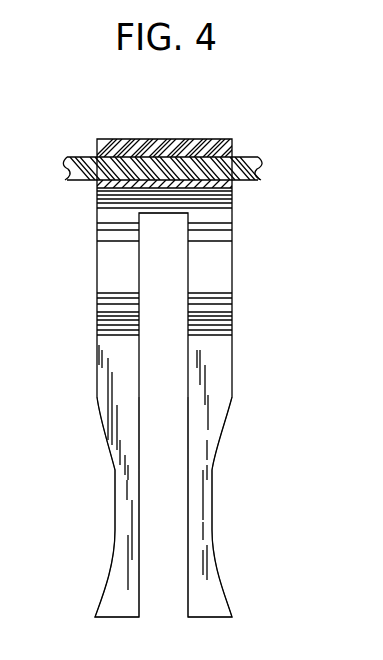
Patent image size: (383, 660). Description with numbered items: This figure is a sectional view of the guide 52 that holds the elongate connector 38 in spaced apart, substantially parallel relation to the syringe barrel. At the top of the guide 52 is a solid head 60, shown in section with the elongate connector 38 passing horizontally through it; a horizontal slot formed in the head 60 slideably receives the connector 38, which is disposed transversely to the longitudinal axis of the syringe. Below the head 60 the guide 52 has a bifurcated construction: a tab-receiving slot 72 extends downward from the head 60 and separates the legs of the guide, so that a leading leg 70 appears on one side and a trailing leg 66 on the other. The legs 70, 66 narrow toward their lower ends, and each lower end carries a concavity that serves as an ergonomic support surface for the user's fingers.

The solid head 60 is at (168, 139).
The elongate connector 38 is at (244, 157).
The tab-receiving slot 72 is at (143, 283).
The guide 52 is at (95, 352).
The leading leg 70 is at (105, 387).
The trailing leg 66 is at (213, 385).